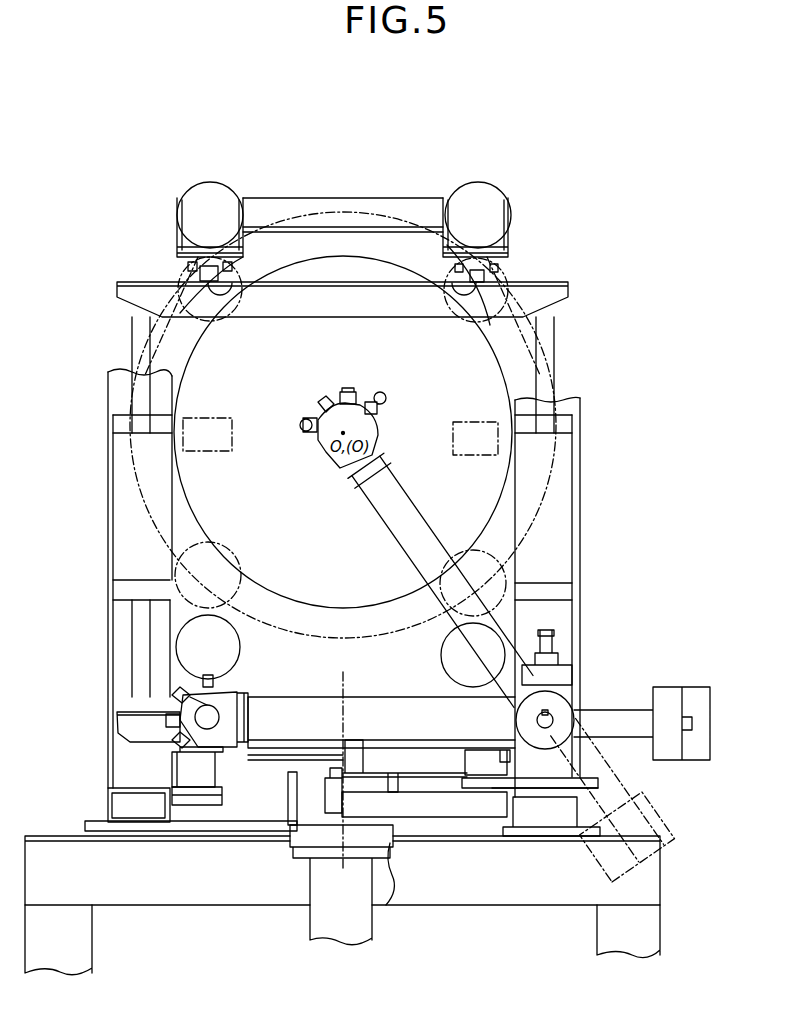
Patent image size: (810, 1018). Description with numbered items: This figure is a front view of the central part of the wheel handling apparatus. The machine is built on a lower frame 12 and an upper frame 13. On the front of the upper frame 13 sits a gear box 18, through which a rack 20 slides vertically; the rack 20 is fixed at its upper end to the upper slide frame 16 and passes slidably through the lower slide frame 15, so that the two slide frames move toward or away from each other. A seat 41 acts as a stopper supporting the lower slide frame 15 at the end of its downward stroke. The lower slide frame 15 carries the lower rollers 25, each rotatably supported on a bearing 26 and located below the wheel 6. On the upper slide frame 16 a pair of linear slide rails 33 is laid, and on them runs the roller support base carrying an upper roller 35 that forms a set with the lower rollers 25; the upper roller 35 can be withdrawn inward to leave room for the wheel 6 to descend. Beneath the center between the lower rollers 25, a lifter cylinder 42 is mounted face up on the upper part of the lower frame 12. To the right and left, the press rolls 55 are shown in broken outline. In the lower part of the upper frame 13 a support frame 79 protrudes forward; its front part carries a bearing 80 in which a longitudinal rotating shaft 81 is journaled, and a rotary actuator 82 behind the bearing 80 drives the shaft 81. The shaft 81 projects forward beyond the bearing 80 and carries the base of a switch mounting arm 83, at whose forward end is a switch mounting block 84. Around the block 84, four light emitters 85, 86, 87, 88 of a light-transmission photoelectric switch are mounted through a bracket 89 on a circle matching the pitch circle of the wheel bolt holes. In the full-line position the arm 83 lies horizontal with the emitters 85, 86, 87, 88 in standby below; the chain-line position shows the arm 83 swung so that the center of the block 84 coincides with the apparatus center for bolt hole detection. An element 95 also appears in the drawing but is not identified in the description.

The wheel 6 is at (553, 459).
The lower frame 12 is at (669, 936).
The upper frame 13 is at (584, 614).
The lower slide frame 15 is at (125, 728).
The upper slide frame 16 is at (560, 283).
The gear box 18 is at (112, 523).
The rack 20 is at (132, 325).
The lower rollers 25 is at (240, 651).
The bearing 26 is at (244, 557).
The linear slide rails 33 is at (240, 280).
The upper roller 35 is at (212, 182).
The seat (stopper) 41 is at (183, 772).
The lifter cylinder 42 is at (318, 918).
The press rolls 55 is at (216, 420).
The support frame 79 is at (542, 818).
The bearing 80 is at (576, 692).
The rotating shaft 81 is at (553, 726).
The rotary actuator 82 is at (565, 675).
The switch mounting arm 83 is at (393, 527).
The switch mounting block 84 is at (232, 750).
The light emitter 85 is at (380, 408).
The light emitter 86 is at (348, 392).
The light emitter 87 is at (325, 402).
The light emitter 88 is at (305, 420).
The bracket 89 is at (187, 687).
The pin 95 is at (363, 762).